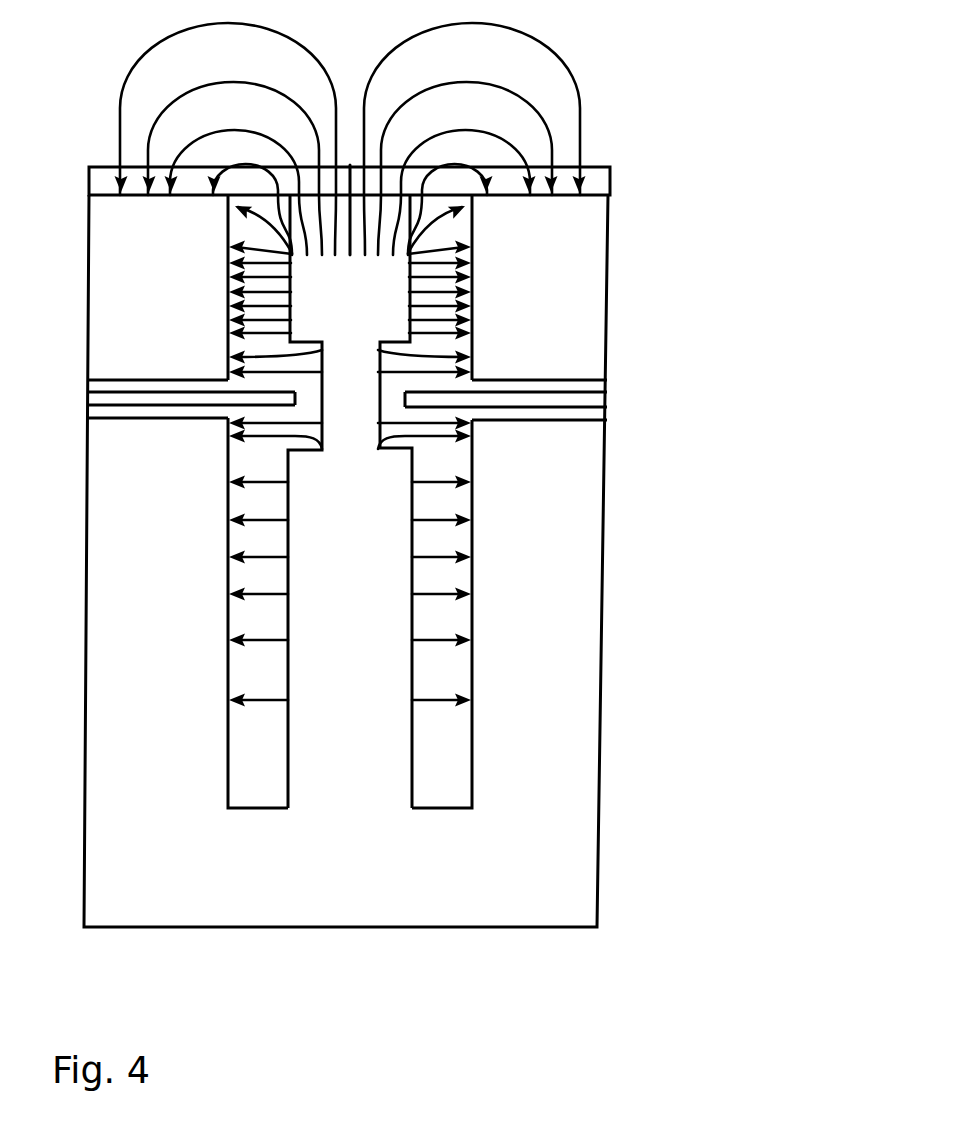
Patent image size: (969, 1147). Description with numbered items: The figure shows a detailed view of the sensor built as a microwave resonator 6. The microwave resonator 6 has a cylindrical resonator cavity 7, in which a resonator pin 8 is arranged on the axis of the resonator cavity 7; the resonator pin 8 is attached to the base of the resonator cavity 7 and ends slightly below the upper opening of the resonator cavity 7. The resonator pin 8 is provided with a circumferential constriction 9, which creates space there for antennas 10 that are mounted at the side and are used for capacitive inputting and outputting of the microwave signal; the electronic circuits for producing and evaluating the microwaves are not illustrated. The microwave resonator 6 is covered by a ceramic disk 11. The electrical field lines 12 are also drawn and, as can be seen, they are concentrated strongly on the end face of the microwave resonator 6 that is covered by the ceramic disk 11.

The microwave resonator 6 is at (520, 776).
The resonator cavity 7 is at (450, 223).
The resonator pin 8 is at (365, 587).
The constriction 9 is at (387, 402).
The antennas 10 is at (527, 392).
The ceramic disk 11 is at (612, 170).
The electrical field lines 12 is at (545, 63).